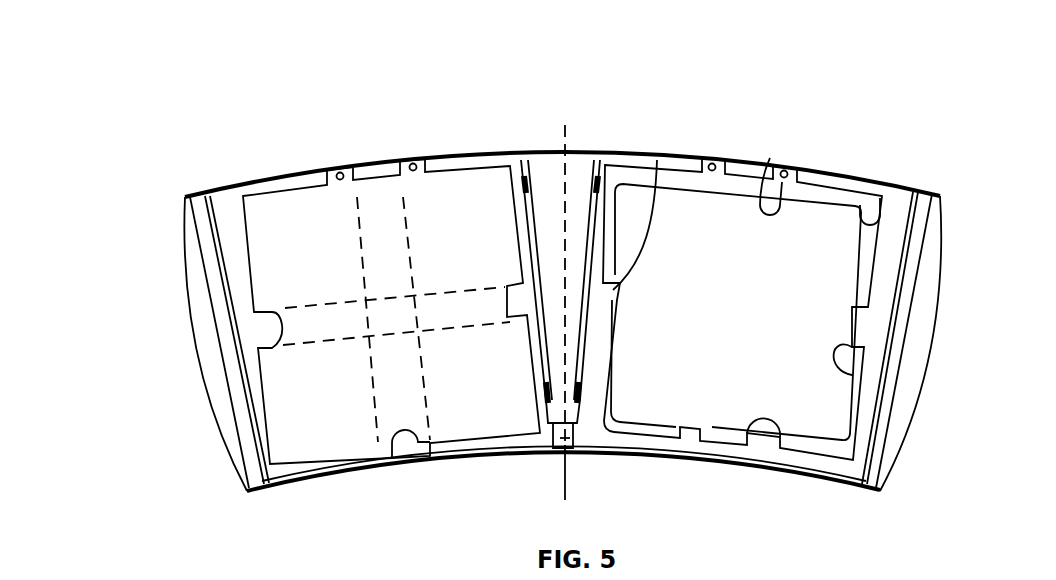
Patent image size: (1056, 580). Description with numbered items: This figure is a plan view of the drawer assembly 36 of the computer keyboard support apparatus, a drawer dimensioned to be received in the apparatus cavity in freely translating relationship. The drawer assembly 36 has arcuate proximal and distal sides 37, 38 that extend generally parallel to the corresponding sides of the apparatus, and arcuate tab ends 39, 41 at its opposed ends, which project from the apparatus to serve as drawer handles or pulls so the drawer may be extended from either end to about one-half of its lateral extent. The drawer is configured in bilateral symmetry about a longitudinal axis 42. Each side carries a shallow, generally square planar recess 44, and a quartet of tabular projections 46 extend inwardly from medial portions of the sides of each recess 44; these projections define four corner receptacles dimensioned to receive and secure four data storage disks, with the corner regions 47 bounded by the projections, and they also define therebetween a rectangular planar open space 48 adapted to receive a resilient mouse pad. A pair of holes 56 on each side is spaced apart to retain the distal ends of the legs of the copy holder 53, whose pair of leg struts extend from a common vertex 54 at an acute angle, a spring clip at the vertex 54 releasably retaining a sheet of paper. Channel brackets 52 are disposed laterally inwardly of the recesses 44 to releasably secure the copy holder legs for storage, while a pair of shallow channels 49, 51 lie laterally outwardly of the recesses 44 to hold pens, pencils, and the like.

The drawer assembly 36 is at (278, 137).
The proximal side 37 is at (335, 478).
The distal side 38 is at (308, 163).
The tab end 39 is at (192, 341).
The tab end 41 is at (940, 290).
The longitudinal axis 42 is at (563, 147).
The recess 44 is at (187, 197).
The tabular projections 46 is at (270, 295).
The panel section 47 is at (271, 209).
The rectangular planar open space 48 is at (807, 269).
The shallow channel 49 is at (885, 405).
The shallow channel 51 is at (240, 413).
The channel brackets 52 is at (579, 158).
The copy holder 53 is at (657, 157).
The vertex 54 is at (552, 448).
The holes 56 is at (411, 166).